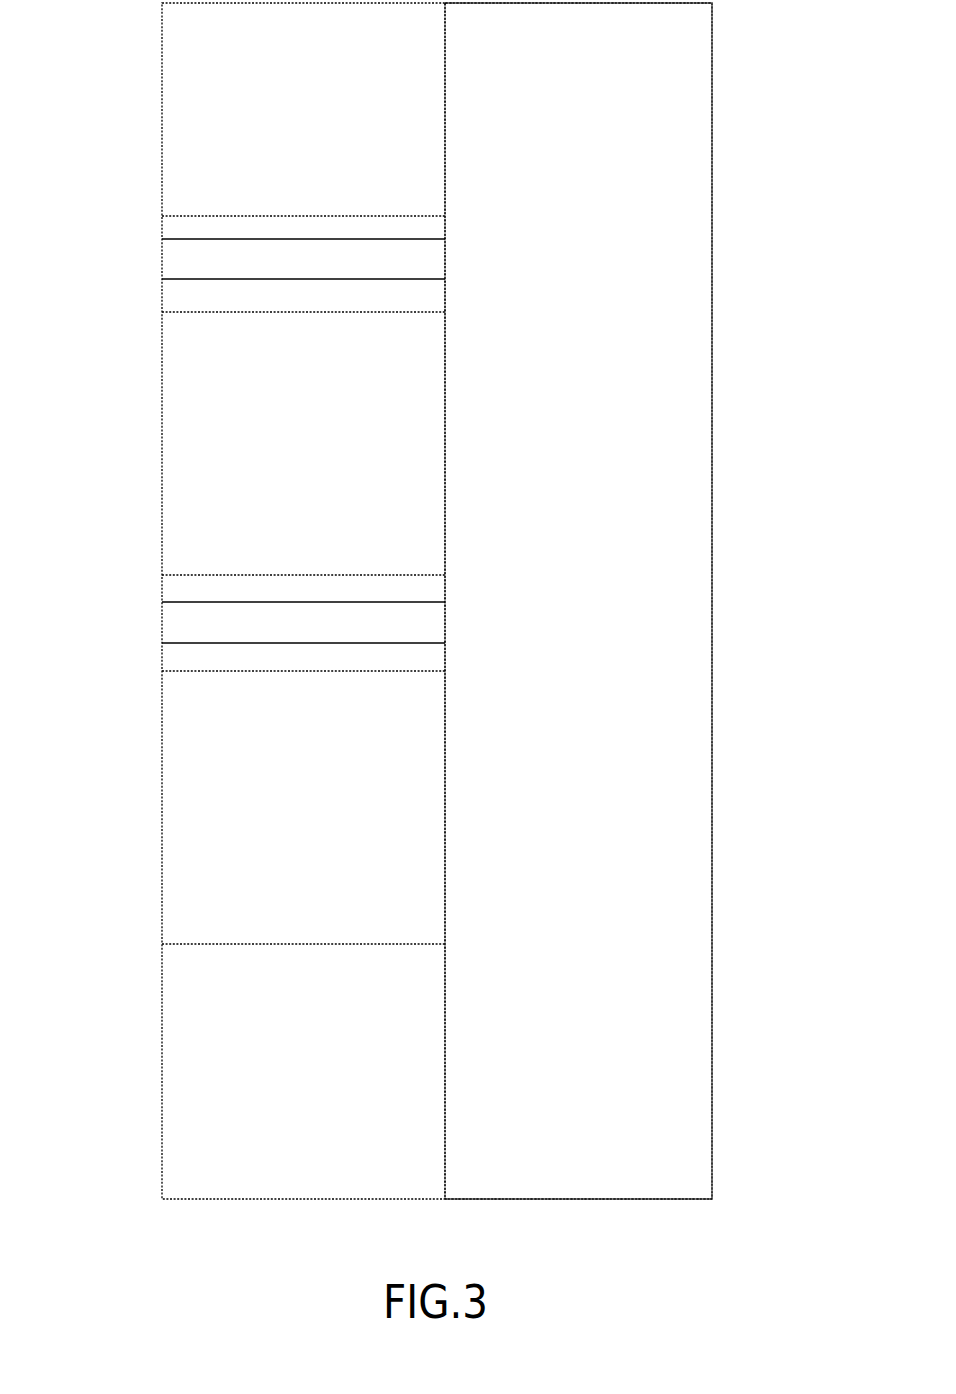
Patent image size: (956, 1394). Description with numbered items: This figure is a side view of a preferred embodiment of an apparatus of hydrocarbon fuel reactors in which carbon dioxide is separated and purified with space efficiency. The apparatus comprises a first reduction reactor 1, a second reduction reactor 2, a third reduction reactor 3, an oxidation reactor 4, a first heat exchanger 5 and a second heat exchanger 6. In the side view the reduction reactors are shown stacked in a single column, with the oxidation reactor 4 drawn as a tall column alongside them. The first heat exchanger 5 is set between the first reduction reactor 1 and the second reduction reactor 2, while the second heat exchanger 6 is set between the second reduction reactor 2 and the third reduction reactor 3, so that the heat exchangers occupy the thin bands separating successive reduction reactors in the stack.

The first reduction reactor 1 is at (152, 100).
The second reduction reactor 2 is at (152, 441).
The third reduction reactor 3 is at (152, 820).
The oxidation reactor 4 is at (722, 599).
The first heat exchanger 5 is at (162, 259).
The second heat exchanger 6 is at (162, 623).